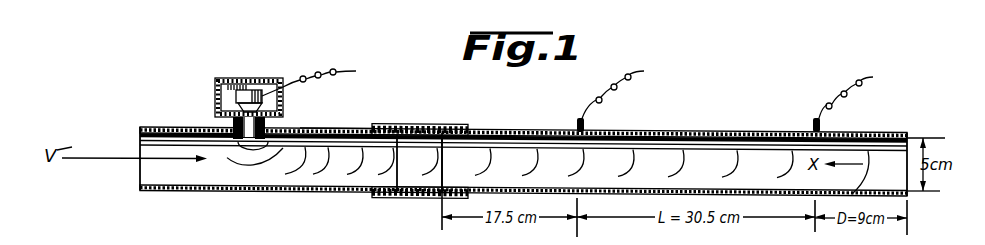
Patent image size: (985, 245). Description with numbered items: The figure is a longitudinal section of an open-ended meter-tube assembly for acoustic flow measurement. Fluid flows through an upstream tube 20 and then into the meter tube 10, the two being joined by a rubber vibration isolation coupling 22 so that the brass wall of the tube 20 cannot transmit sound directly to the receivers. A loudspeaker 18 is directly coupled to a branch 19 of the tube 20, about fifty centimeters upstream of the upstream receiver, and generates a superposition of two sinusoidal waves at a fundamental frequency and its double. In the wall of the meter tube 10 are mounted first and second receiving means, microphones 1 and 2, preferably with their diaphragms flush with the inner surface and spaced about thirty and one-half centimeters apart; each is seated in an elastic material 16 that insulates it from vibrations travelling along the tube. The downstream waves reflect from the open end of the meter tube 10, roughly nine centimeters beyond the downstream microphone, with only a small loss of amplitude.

The microphone 1 is at (804, 121).
The microphone 2 is at (572, 120).
The meter tube 10 is at (890, 131).
The elastic material 16 is at (589, 130).
The loudspeaker 18 is at (236, 78).
The branch 19 is at (233, 127).
The tube 20 is at (331, 128).
The rubber vibration isolation coupling 22 is at (396, 196).